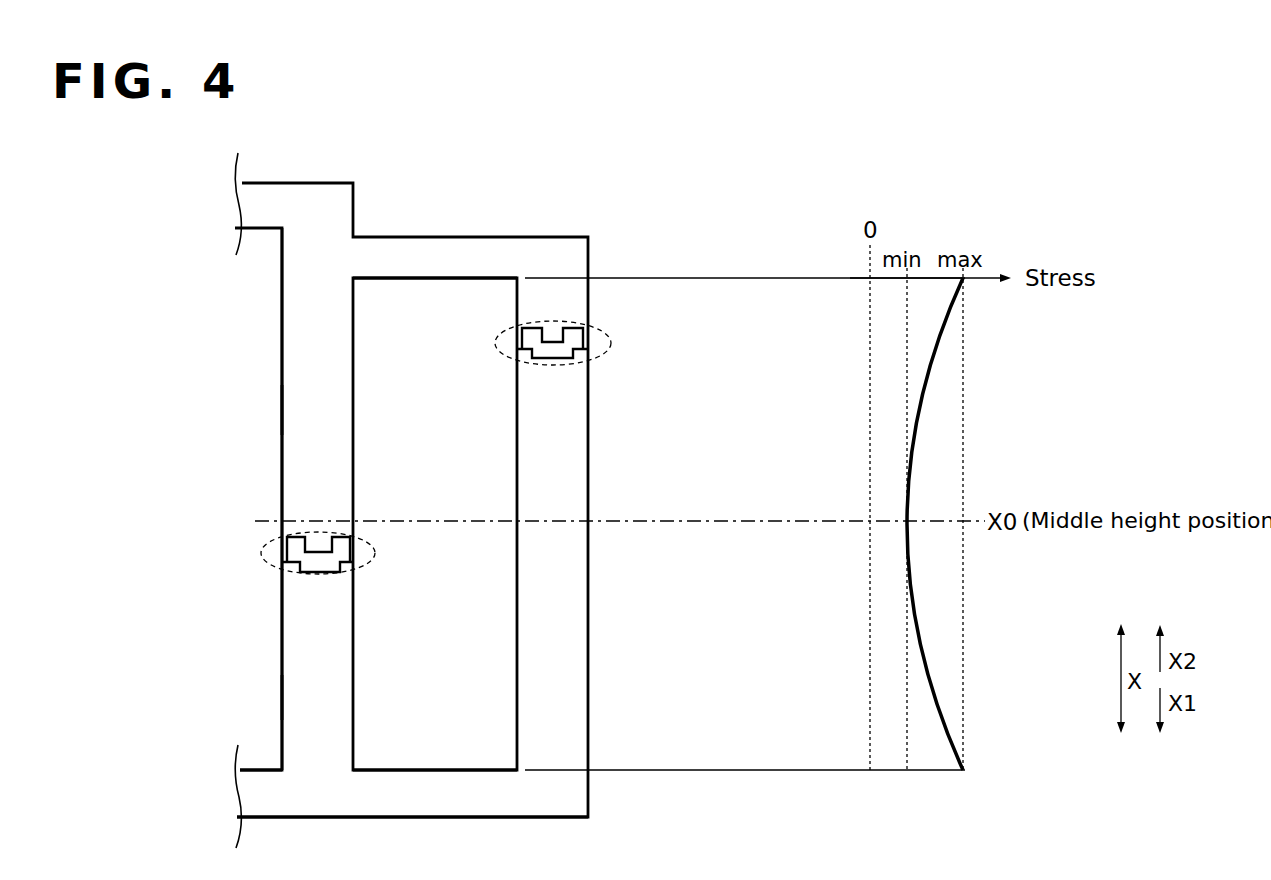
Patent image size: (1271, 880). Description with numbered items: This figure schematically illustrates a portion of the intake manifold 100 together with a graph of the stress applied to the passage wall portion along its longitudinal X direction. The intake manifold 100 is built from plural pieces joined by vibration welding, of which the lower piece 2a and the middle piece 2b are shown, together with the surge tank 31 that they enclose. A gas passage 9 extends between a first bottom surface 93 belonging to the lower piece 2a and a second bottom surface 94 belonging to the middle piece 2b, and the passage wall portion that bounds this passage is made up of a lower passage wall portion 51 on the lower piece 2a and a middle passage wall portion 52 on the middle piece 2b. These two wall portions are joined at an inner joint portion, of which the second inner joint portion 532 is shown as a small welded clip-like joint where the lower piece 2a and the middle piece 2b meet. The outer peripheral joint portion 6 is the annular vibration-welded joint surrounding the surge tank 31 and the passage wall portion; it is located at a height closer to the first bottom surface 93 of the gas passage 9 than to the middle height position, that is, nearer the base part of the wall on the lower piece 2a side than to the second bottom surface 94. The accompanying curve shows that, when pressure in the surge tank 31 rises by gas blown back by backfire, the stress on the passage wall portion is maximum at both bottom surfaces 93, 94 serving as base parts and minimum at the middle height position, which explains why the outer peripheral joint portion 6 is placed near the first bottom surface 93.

The intake manifold 100 is at (200, 196).
The lower piece 2a is at (262, 320).
The middle piece 2b is at (234, 656).
The lower passage wall portion 51 is at (292, 412).
The middle passage wall portion 52 is at (292, 697).
The second inner joint portion 532 is at (259, 553).
The outer peripheral joint portion 6 is at (494, 343).
The gas passage 9 is at (492, 645).
The first bottom surface 93 is at (424, 278).
The second bottom surface 94 is at (422, 770).
The surge tank 31 is at (275, 770).